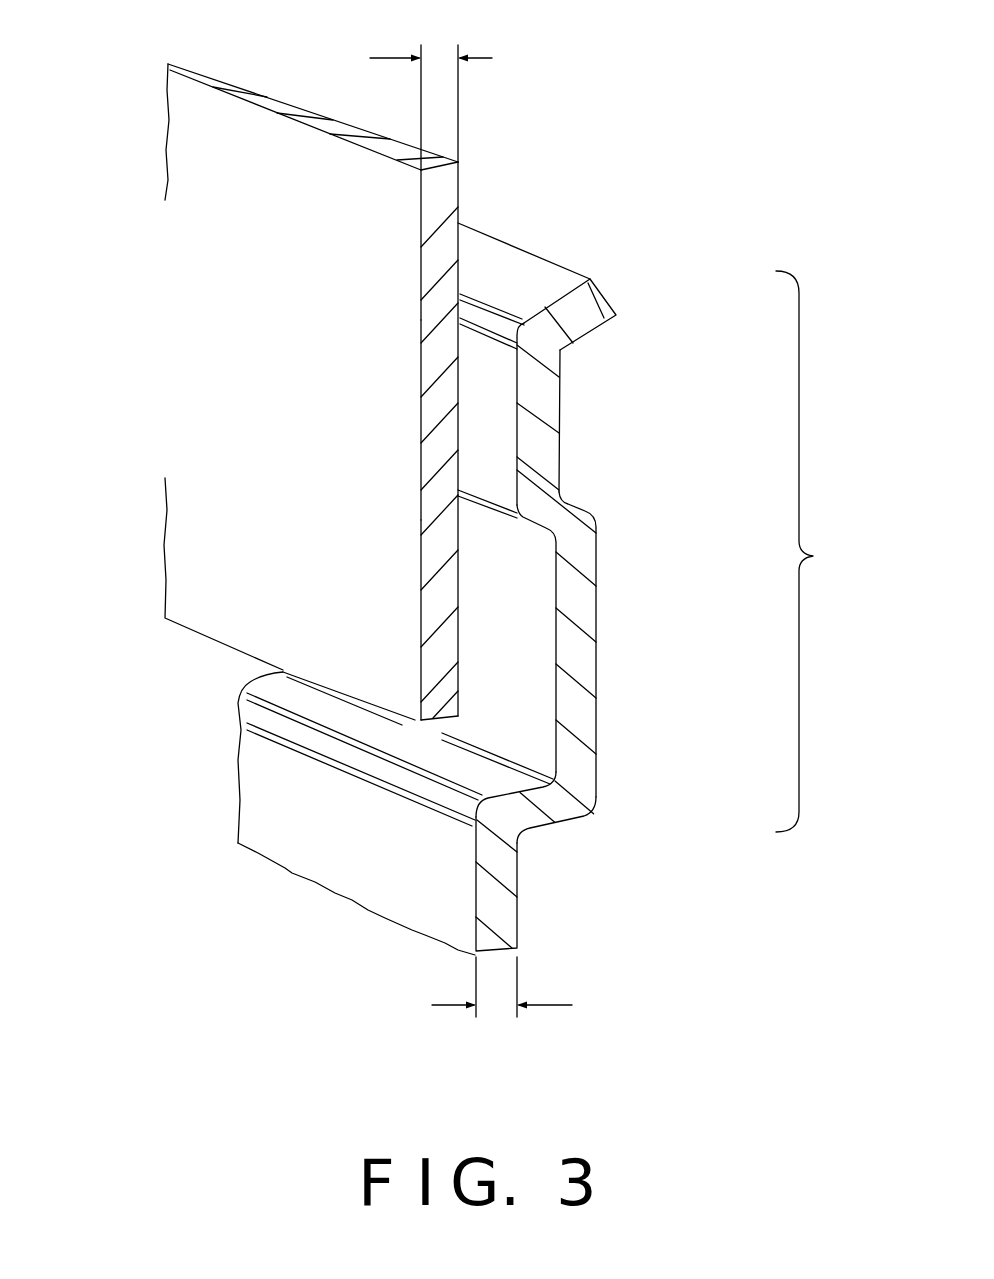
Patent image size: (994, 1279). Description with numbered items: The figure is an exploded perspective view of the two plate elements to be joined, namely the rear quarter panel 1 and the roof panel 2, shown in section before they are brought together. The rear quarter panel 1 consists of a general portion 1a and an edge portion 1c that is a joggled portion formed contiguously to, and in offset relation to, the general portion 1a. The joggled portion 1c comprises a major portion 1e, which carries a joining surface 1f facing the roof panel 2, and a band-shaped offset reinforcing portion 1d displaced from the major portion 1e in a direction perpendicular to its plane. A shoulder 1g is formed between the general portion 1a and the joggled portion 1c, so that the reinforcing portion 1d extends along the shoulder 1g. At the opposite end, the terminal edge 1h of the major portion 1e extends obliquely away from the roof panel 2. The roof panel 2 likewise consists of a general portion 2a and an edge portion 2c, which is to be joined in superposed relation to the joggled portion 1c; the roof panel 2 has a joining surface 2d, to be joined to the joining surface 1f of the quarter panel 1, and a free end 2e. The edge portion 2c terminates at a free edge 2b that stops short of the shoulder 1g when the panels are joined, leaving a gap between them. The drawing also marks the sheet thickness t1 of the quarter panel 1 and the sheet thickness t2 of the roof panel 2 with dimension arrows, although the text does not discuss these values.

The rear quarter panel 1 is at (609, 741).
The general portion 1a is at (502, 908).
The edge portion 1c is at (825, 551).
The offset reinforcing portion 1d is at (583, 604).
The major portion 1e is at (547, 407).
The joining surface 1f is at (487, 344).
The shoulder 1g is at (497, 807).
The terminal edge 1h is at (600, 302).
The roof panel 2 is at (240, 265).
The general portion 2a is at (433, 206).
The free edge 2b is at (429, 719).
The edge portion 2c is at (432, 442).
The joining surface 2d is at (458, 397).
The free end 2e is at (435, 606).
The thickness of member 1 t1 is at (502, 1013).
The thickness of plate 2 t2 is at (431, 85).